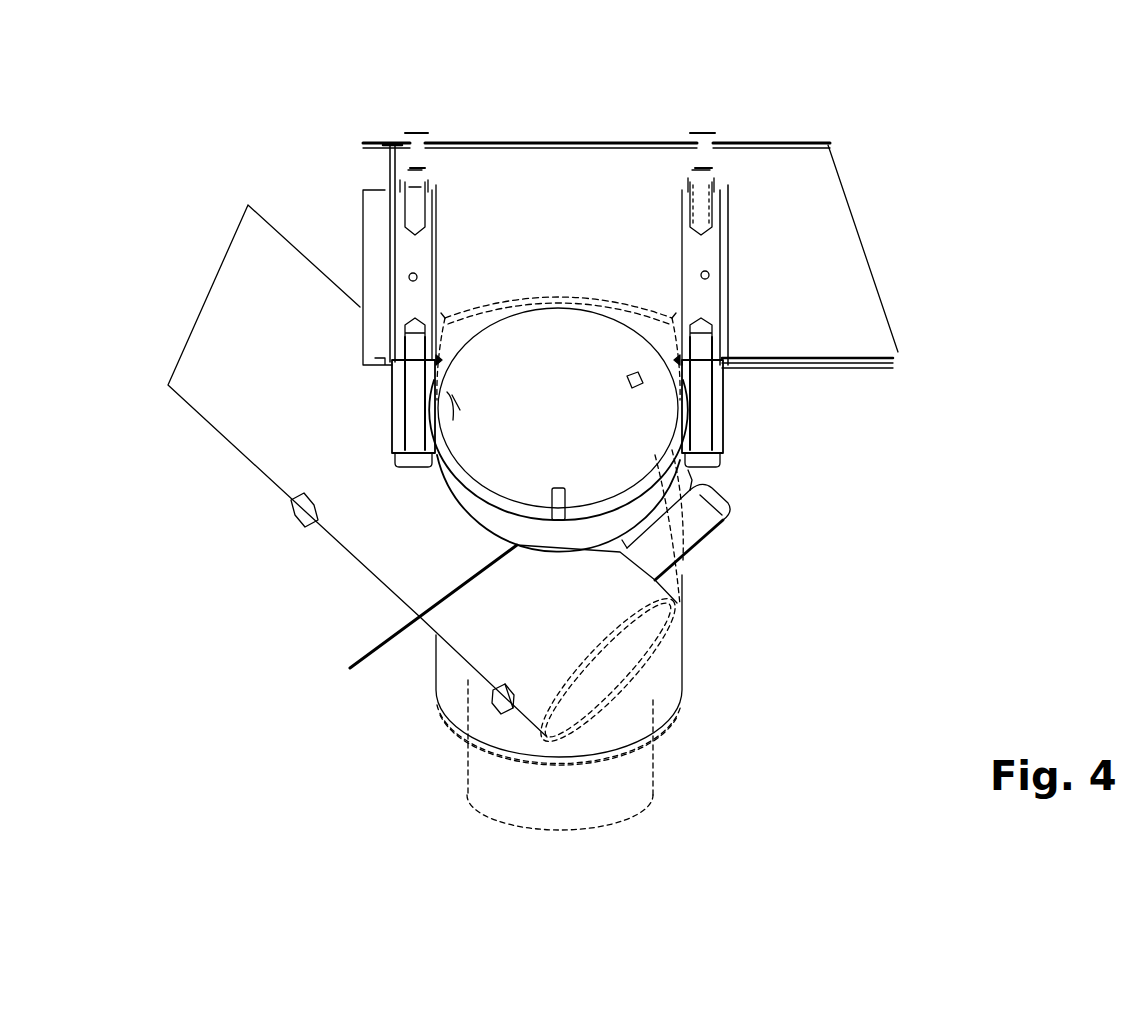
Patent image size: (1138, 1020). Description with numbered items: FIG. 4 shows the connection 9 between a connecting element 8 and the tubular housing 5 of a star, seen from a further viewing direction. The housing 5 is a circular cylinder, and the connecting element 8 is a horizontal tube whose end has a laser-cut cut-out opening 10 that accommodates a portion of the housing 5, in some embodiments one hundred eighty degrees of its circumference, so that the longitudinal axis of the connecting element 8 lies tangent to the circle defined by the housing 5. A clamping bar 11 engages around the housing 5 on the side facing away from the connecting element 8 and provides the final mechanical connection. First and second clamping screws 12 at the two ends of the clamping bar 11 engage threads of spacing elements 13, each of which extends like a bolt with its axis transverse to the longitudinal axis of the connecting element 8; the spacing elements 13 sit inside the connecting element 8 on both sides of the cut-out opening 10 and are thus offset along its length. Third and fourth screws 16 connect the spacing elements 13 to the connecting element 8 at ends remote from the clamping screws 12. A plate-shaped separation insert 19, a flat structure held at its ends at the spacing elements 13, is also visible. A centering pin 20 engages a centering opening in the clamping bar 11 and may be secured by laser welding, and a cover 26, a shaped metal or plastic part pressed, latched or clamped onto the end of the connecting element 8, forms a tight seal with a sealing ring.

The tubular housing 5 is at (490, 778).
The connecting element 8 is at (530, 143).
The connection 9 is at (343, 153).
The cut-out opening 10 is at (495, 641).
The clamping bar 11 is at (645, 528).
The clamping screw 12 is at (413, 427).
The spacing element 13 is at (705, 255).
The screw 16 is at (720, 183).
The separation insert 19 is at (855, 220).
The centering pin 20 is at (552, 510).
The cover 26 is at (585, 688).